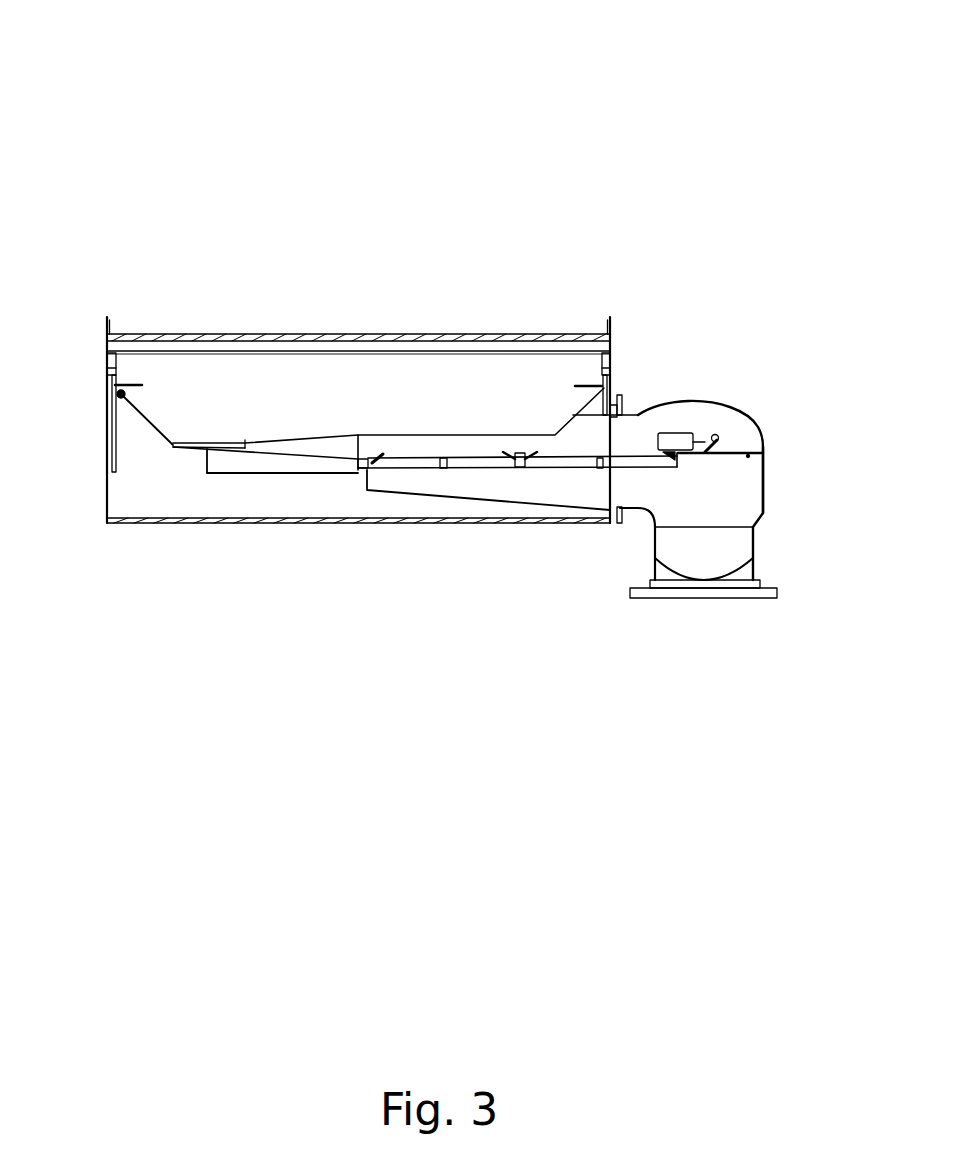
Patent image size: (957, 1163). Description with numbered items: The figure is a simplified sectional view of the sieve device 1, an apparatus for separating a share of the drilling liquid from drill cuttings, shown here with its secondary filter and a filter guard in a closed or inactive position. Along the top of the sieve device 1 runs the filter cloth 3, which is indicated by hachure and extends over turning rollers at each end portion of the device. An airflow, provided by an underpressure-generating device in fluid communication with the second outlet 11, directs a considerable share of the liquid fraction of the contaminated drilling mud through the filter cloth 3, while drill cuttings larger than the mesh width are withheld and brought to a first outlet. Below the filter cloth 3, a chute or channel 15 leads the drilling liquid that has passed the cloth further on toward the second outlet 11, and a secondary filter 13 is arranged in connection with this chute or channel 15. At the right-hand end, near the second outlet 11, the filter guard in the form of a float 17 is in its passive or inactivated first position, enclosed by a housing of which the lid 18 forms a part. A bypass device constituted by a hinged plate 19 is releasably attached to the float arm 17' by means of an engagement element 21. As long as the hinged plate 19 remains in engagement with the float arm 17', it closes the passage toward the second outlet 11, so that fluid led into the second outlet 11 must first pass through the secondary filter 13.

The sieve device 1 is at (133, 187).
The filter cloth 3 is at (233, 355).
The second outlet 11 is at (702, 609).
The secondary filter 13 is at (497, 484).
The chute or channel 15 is at (400, 493).
The float 17 is at (690, 375).
The float arm 17' is at (742, 376).
The lid 18 is at (740, 412).
The hinged plate 19 is at (723, 457).
The engagement element 21 is at (717, 450).